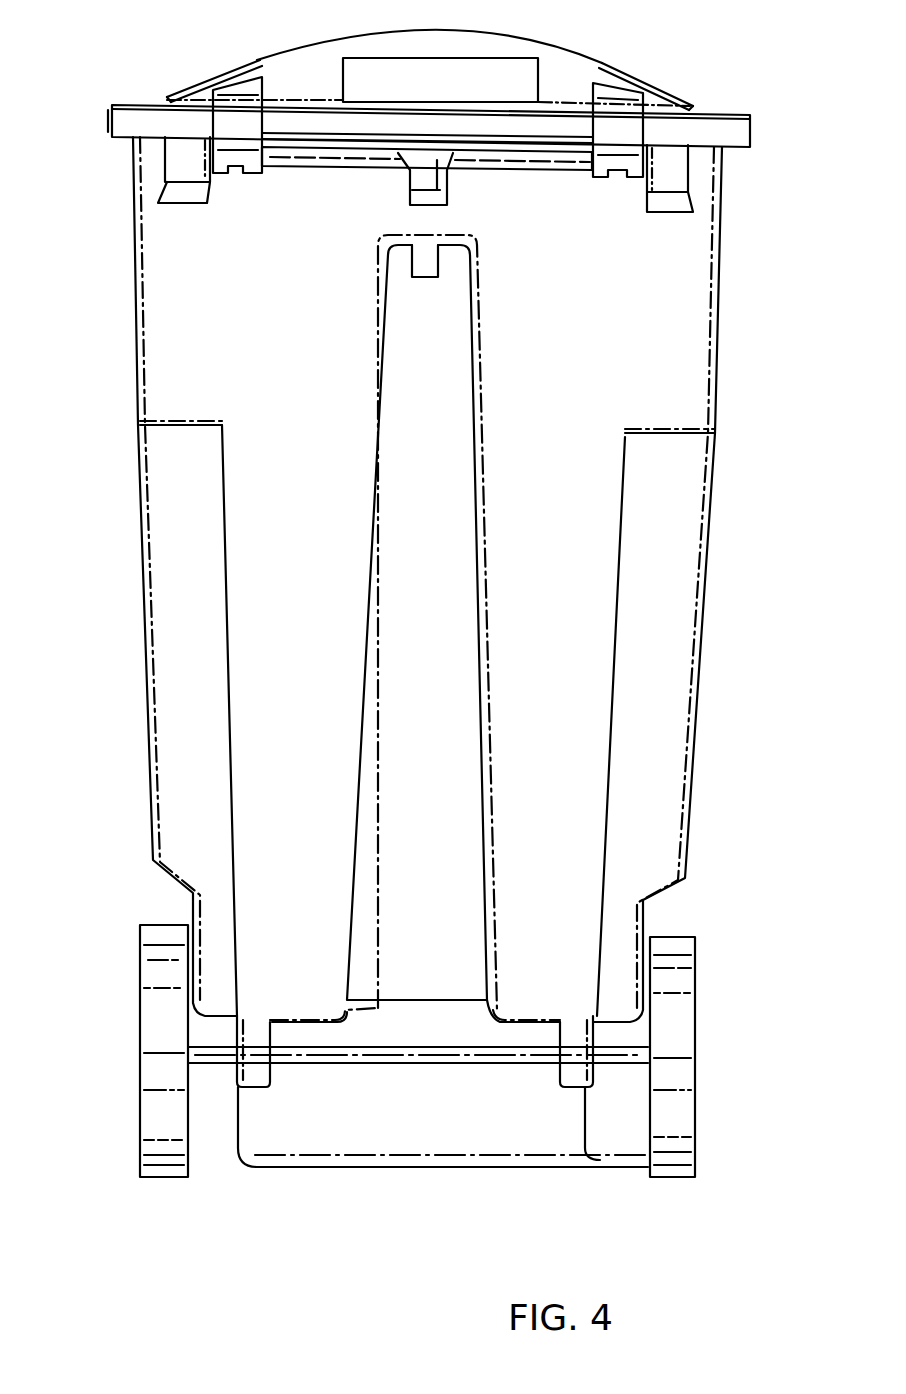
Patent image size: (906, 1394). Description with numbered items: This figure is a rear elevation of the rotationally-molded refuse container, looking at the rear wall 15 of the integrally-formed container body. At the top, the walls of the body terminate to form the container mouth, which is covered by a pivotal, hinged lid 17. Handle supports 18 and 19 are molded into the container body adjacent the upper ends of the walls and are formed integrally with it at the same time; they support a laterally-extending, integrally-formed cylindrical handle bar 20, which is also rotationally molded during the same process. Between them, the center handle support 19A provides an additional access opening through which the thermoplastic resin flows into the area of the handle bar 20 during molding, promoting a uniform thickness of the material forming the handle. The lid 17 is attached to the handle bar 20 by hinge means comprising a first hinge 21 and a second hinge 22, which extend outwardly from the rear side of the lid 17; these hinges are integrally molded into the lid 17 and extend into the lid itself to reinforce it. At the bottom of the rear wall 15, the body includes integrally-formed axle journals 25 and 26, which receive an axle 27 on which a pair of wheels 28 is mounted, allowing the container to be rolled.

The rear wall 15 is at (300, 307).
The lid 17 is at (470, 48).
The handle support 18 is at (680, 168).
The handle support 19 is at (175, 162).
The center handle support 19A is at (437, 177).
The handle bar 20 is at (310, 143).
The first hinge 21 is at (620, 117).
The second hinge 22 is at (250, 121).
The axle journal 25 is at (568, 1073).
The axle journal 26 is at (260, 1076).
The axle 27 is at (408, 1058).
The wheels 28 is at (145, 990).